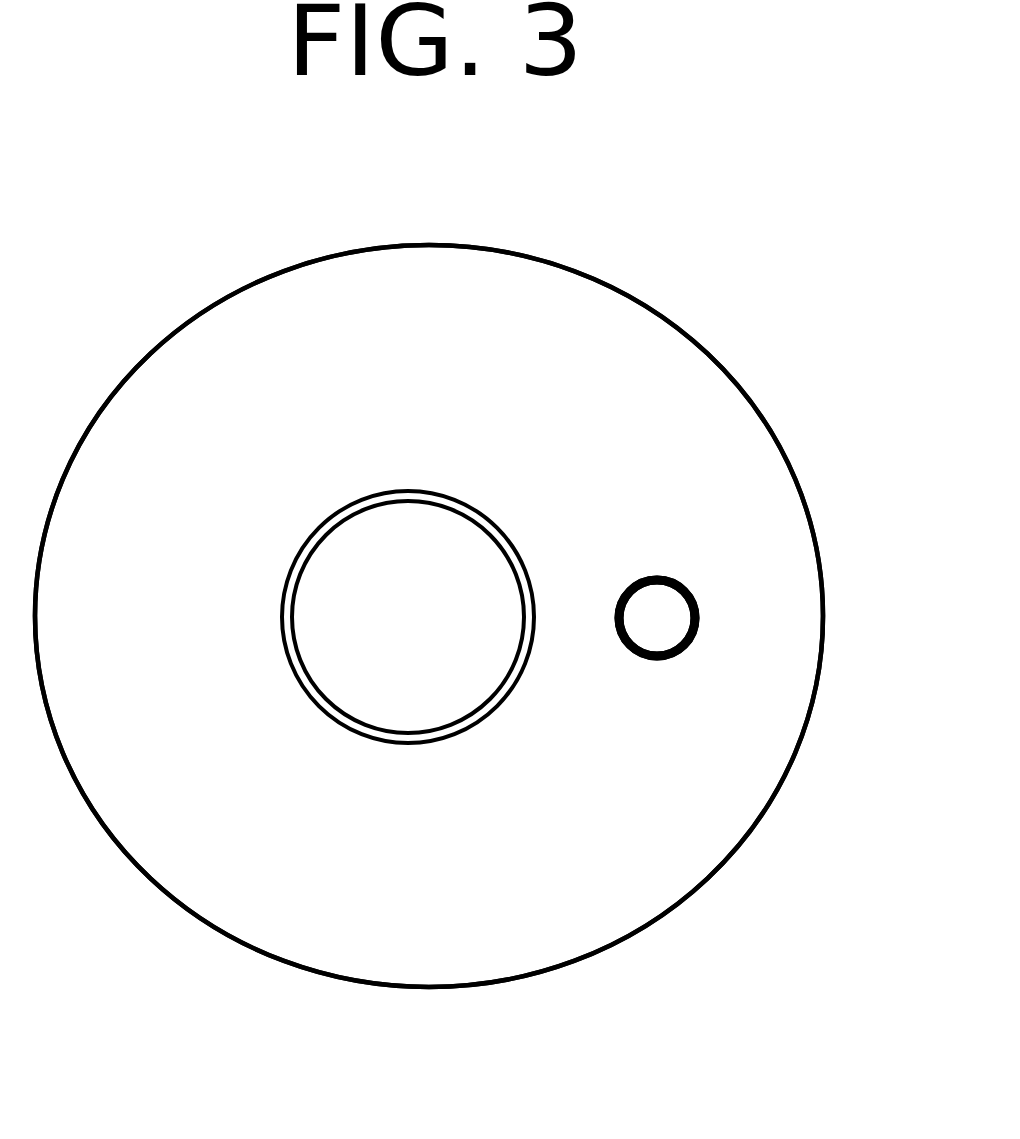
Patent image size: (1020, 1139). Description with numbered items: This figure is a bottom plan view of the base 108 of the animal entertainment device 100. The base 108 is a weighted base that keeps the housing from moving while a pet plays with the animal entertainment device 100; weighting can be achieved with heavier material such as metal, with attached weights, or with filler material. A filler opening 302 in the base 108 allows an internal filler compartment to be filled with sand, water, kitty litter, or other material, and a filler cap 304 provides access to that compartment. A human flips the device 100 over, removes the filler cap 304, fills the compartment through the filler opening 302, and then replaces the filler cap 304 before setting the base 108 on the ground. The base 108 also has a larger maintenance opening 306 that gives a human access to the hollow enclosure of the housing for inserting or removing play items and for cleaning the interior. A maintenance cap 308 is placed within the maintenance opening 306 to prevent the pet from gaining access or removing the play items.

The animal entertainment device 100 is at (832, 222).
The base 108 is at (282, 354).
The filler opening 302 is at (660, 674).
The filler cap 304 is at (664, 606).
The maintenance opening 306 is at (411, 757).
The maintenance cap 308 is at (391, 541).